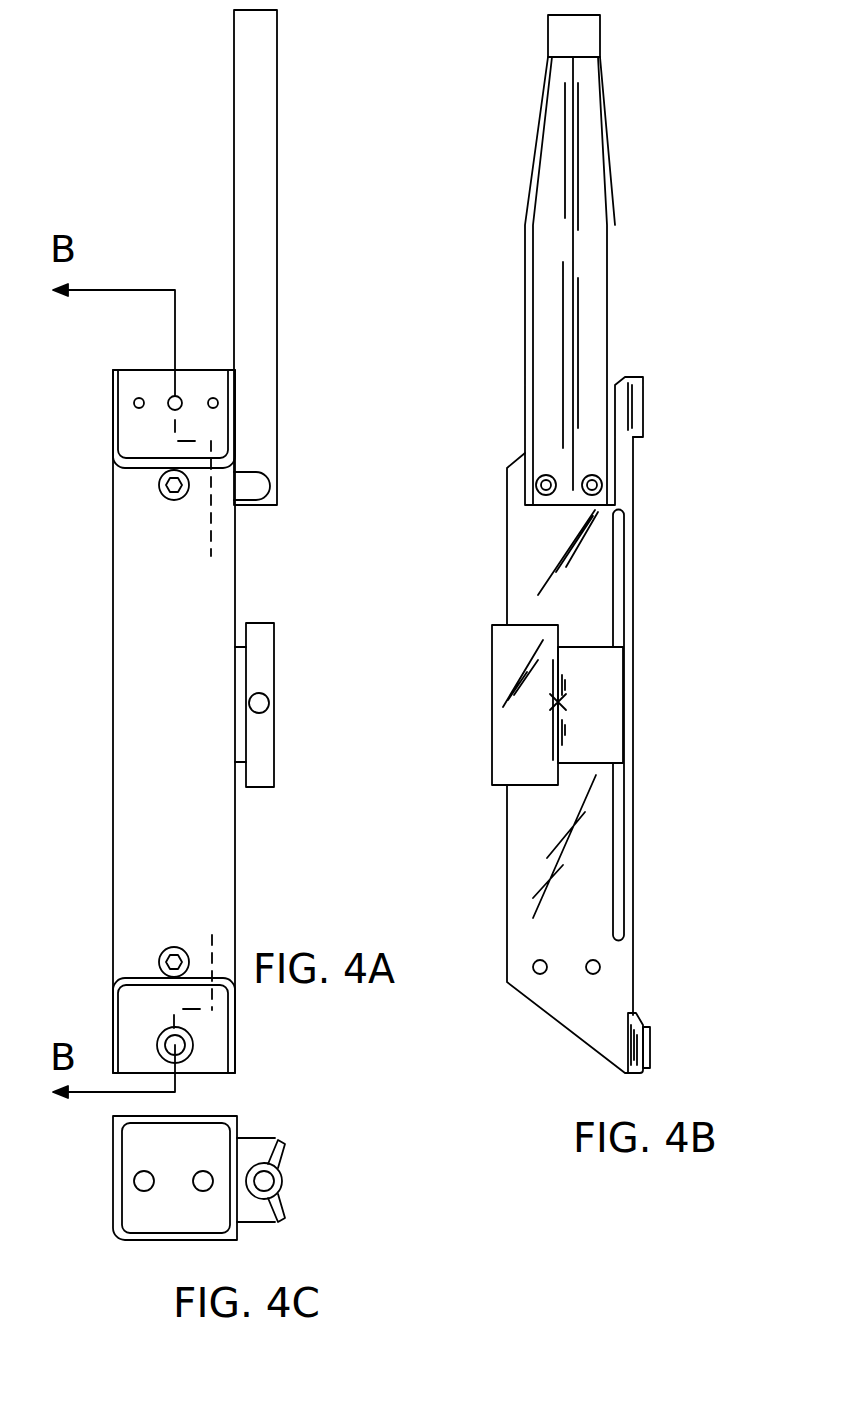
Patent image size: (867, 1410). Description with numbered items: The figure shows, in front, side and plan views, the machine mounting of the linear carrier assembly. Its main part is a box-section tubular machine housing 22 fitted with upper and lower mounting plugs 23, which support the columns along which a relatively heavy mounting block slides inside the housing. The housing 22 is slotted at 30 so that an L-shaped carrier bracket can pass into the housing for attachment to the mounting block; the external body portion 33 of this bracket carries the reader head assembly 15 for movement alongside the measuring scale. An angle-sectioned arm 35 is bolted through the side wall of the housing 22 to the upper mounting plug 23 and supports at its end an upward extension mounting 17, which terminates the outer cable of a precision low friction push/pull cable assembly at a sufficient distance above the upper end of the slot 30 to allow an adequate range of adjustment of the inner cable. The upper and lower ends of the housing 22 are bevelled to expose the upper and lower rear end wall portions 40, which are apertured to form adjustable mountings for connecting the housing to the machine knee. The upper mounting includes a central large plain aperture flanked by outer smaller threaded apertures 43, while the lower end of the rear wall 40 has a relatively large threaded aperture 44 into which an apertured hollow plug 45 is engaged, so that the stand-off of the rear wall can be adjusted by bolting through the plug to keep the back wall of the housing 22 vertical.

In FIG. 4A, the reader head assembly 15 is at (262, 655).
In FIG. 4B, the reader head assembly 15 is at (503, 767).
In FIG. 4B, the upward extension mounting 17 is at (583, 32).
In FIG. 4A, the machine housing 22 is at (215, 868).
In FIG. 4B, the machine housing 22 is at (525, 910).
In FIG. 4C, the mounting plugs 23 is at (190, 1218).
In FIG. 4B, the slot 30 is at (618, 877).
In FIG. 4B, the body portion 33 is at (613, 697).
In FIG. 4A, the angle-sectioned arm 35 is at (258, 268).
In FIG. 4B, the angle-sectioned arm 35 is at (597, 270).
In FIG. 4C, the angle-sectioned arm 35 is at (278, 1145).
In FIG. 4A, the rear end wall portion 40 is at (170, 397).
In FIG. 4A, the threaded apertures 43 is at (134, 403).
In FIG. 4A, the threaded aperture 44 is at (195, 1052).
In FIG. 4A, the hollow plug 45 is at (193, 1041).
In FIG. 4B, the hollow plug 45 is at (650, 1050).